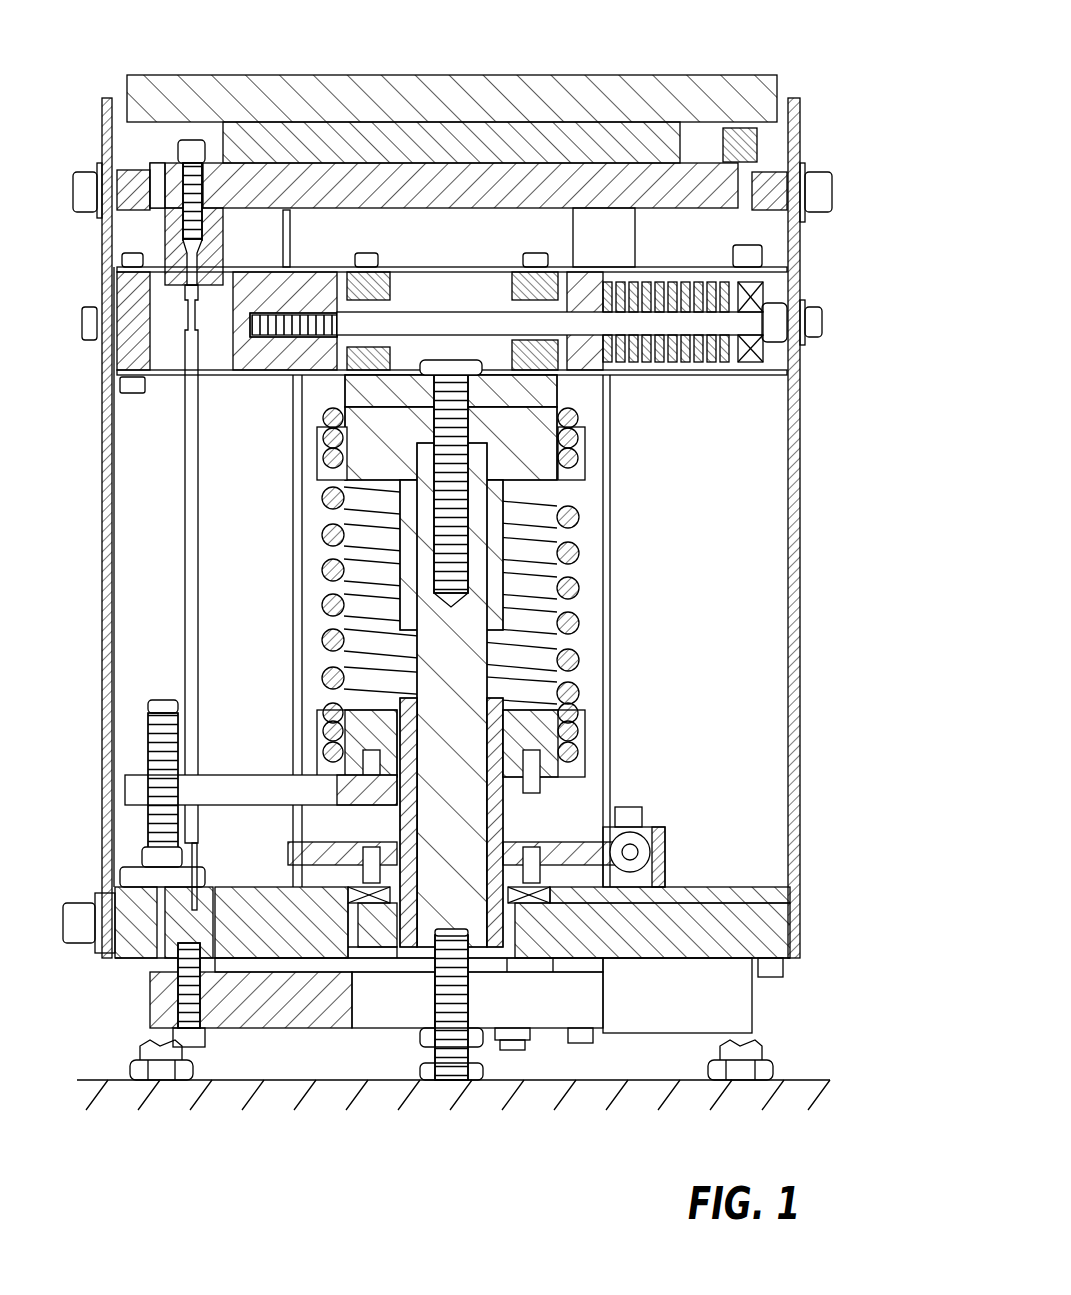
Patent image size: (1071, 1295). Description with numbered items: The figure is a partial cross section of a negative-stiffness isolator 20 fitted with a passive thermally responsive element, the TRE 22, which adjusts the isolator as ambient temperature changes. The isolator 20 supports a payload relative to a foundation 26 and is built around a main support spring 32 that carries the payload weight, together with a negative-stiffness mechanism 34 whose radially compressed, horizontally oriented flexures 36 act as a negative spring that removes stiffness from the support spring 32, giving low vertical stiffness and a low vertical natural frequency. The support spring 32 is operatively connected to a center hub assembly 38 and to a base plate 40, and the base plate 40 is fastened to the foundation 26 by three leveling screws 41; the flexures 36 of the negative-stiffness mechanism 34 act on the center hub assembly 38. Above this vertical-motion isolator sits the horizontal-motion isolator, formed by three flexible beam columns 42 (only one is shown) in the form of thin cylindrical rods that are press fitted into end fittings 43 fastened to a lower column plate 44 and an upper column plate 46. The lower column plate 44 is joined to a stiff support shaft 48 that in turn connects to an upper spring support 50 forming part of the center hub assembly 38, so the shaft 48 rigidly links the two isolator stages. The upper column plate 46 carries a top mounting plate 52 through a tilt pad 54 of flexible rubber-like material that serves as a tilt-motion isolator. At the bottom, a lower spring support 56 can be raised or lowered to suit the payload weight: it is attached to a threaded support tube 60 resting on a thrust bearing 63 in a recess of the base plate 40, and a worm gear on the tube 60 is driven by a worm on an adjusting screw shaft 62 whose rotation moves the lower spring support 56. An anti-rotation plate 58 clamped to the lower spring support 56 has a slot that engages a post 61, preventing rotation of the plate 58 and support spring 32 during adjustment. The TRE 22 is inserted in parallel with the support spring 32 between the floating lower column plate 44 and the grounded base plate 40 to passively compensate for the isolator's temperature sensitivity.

The negative-stiffness isolator 20 is at (848, 192).
The TRE 22 is at (285, 962).
The foundation 26 is at (288, 1080).
The main support spring 32 is at (579, 556).
The negative-stiffness mechanism 34 is at (836, 322).
The flexures 36 is at (316, 268).
The center hub assembly 38 is at (314, 390).
The base plate 40 is at (130, 912).
The leveling screws 41 is at (142, 1052).
The flexible beam columns 42 is at (185, 582).
The end fittings 43 is at (170, 240).
The lower column plate 44 is at (220, 1020).
The upper column plate 46 is at (172, 187).
The stiff support shaft 48 is at (465, 680).
The upper spring support 50 is at (550, 460).
The top mounting plate 52 is at (668, 88).
The tilt pad 54 is at (672, 145).
The lower spring support 56 is at (555, 758).
The anti-rotation plate 58 is at (214, 790).
The threaded support tube 60 is at (392, 830).
The post 61 is at (145, 714).
The adjusting screw shaft 62 is at (632, 852).
The thrust bearing 63 is at (360, 915).